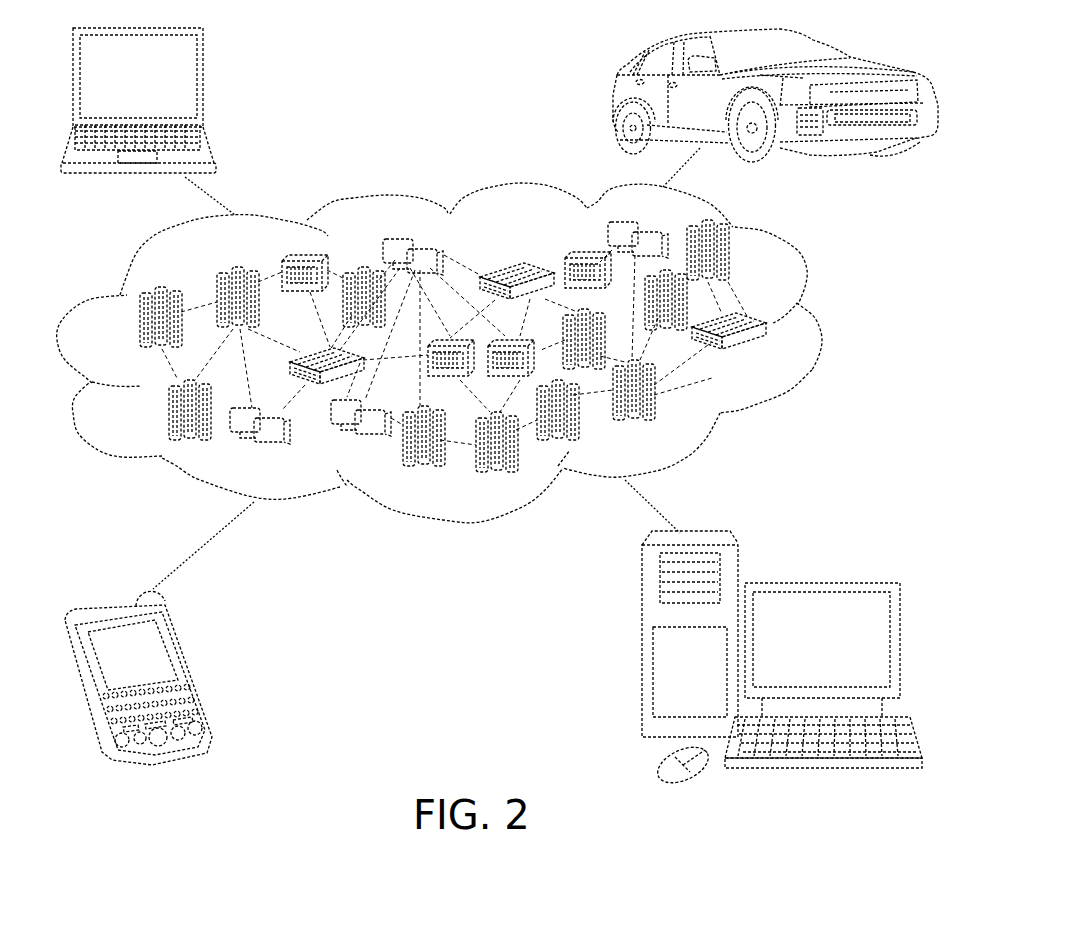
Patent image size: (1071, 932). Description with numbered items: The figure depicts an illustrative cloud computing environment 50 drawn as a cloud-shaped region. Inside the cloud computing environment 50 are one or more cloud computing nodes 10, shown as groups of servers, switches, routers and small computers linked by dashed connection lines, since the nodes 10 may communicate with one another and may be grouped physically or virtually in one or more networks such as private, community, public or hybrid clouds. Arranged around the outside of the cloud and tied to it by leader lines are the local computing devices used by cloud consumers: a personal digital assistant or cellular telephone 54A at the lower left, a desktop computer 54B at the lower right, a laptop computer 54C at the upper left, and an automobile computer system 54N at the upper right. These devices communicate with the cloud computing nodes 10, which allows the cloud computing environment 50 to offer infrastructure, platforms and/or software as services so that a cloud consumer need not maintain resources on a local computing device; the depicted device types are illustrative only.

The cloud computing node 10 is at (774, 356).
The cloud computing environment 50 is at (821, 328).
The personal digital assistant (PDA) or cellular telephone 54A is at (193, 666).
The desktop computer 54B is at (819, 583).
The laptop computer 54C is at (202, 83).
The automobile computer system 54N is at (612, 98).